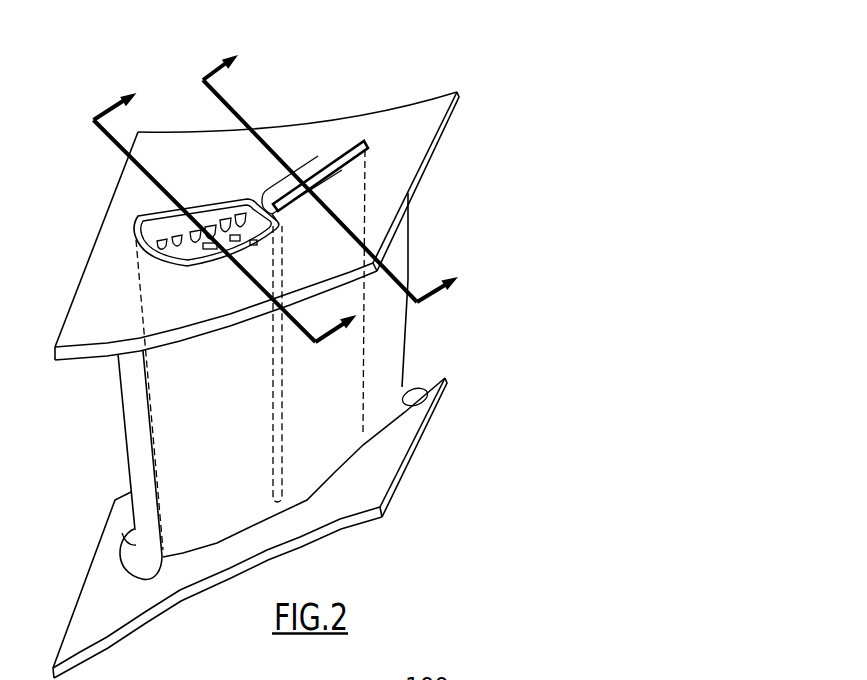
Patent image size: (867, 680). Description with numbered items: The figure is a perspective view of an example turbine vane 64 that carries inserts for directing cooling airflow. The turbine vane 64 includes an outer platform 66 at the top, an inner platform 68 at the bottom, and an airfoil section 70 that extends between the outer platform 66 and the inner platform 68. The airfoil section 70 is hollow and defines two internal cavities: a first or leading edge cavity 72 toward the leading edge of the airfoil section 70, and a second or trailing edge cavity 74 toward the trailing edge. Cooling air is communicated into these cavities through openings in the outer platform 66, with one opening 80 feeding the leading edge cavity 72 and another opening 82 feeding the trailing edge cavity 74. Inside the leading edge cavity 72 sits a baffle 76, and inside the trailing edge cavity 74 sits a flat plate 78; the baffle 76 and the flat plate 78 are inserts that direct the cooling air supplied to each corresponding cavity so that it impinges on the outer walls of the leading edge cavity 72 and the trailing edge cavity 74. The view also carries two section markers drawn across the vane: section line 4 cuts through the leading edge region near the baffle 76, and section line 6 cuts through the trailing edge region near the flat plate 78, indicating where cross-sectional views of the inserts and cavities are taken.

The turbine vane 64 is at (435, 53).
The outer platform 66 is at (427, 122).
The inner platform 68 is at (374, 488).
The airfoil section 70 is at (157, 447).
The leading edge cavity 72 is at (133, 232).
The trailing edge cavity 74 is at (317, 170).
The baffle 76 is at (160, 222).
The flat plate 78 is at (338, 170).
The opening 80 is at (210, 190).
The opening 82 is at (306, 160).
The section line 4- 4 is at (225, 209).
The section line 6- 6 is at (328, 169).